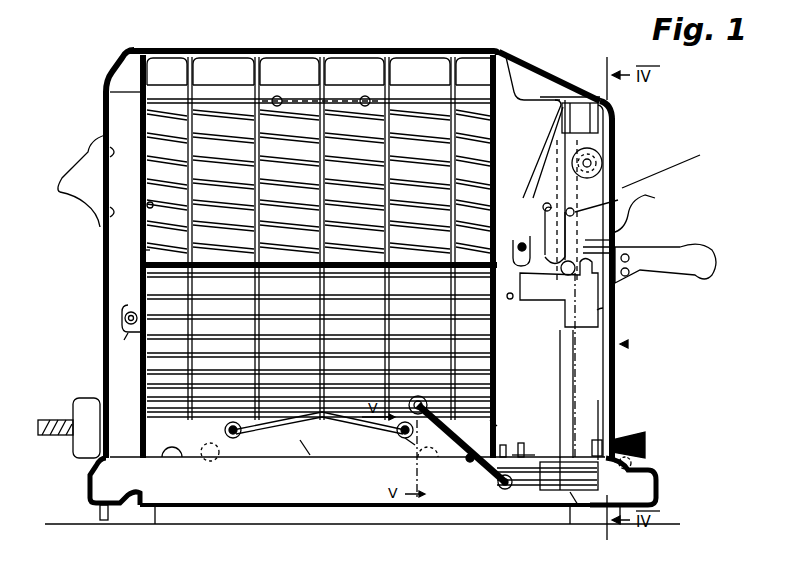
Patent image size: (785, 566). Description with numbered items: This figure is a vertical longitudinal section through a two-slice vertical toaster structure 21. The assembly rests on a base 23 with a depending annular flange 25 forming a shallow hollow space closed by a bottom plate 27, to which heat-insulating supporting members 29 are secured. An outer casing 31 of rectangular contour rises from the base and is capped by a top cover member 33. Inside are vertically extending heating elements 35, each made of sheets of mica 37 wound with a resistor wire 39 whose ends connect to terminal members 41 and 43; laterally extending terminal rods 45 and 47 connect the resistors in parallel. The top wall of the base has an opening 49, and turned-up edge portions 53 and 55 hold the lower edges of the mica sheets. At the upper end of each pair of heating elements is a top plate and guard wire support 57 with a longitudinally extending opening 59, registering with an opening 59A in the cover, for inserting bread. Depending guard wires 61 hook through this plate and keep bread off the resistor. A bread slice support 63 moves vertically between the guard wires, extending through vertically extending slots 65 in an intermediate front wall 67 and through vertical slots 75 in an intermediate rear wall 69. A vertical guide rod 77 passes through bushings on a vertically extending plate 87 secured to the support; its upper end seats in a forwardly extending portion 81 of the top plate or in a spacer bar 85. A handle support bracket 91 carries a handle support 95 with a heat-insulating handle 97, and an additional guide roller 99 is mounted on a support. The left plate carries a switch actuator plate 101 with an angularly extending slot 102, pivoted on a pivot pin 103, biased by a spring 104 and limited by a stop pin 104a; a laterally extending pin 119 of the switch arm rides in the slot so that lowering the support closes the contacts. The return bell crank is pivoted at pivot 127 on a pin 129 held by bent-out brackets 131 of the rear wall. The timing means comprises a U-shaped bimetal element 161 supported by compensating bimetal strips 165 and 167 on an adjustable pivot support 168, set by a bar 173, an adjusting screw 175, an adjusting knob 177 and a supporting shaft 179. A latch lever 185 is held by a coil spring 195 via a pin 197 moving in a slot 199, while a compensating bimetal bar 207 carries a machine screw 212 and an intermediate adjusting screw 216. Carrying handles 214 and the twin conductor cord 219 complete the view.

The vertical toaster structure 21 is at (620, 344).
The base 23 is at (635, 470).
The depending annular flange 25 is at (90, 470).
The bottom plate 27 is at (320, 508).
The supporting members 29 is at (124, 518).
The outer casing 31 is at (103, 326).
The top cover member 33 is at (135, 47).
The heating elements 35 is at (150, 171).
The sheets of mica 37 is at (230, 134).
The resistor wire 39 is at (302, 178).
The terminal member 41 is at (275, 424).
The terminal member 43 is at (397, 436).
The terminal rod 45 is at (224, 427).
The terminal rod 47 is at (408, 446).
The opening 49 is at (305, 458).
The turned-up edge portion 53 is at (172, 447).
The turned-up edge portion 55 is at (215, 460).
The top plate and guard wire support 57 is at (528, 66).
The longitudinally extending opening 59 is at (493, 47).
The registering opening 59A is at (420, 47).
The guard wires 61 is at (310, 76).
The bread slice support 63 is at (300, 262).
The vertically extending slots 65 is at (498, 382).
The intermediate front wall 67 is at (498, 420).
The intermediate rear wall 69 is at (148, 207).
The vertical slots 75 is at (142, 250).
The guide rod 77 is at (562, 361).
The forwardly extending portion 81 is at (533, 78).
The spacer bar 85 is at (600, 100).
The vertically extending plate 87 is at (612, 112).
The handle support bracket 91 is at (600, 244).
The handle support 95 is at (620, 248).
The handle 97 is at (678, 278).
The additional guide roller 99 is at (598, 160).
The switch actuator plate 101 is at (600, 176).
The angularly extending slot 102 is at (545, 156).
The pivot pin 103 is at (552, 360).
The spring 104 is at (620, 202).
The stop pin 104a is at (628, 190).
The laterally extending pin 119 is at (515, 238).
The pivot 127 is at (122, 340).
The pin 129 is at (124, 318).
The bent-out brackets 131 is at (125, 304).
The bimetal element 161 is at (530, 492).
The bimetal strip 165 is at (578, 455).
The bimetal strip 167 is at (582, 505).
The adjustable pivot support 168 is at (590, 505).
The bar 173 is at (592, 424).
The adjusting screw 175 is at (594, 438).
The adjusting knob 177 is at (645, 436).
The supporting shaft 179 is at (629, 463).
The latch lever 185 is at (512, 490).
The coil spring 195 is at (515, 441).
The pin 197 is at (534, 441).
The slot 199 is at (535, 446).
The bimetal bar 207 is at (452, 462).
The machine screw 212 is at (498, 484).
The handles 214 is at (88, 160).
The intermediate adjusting screw 216 is at (462, 452).
The twin conductor cord 219 is at (55, 418).